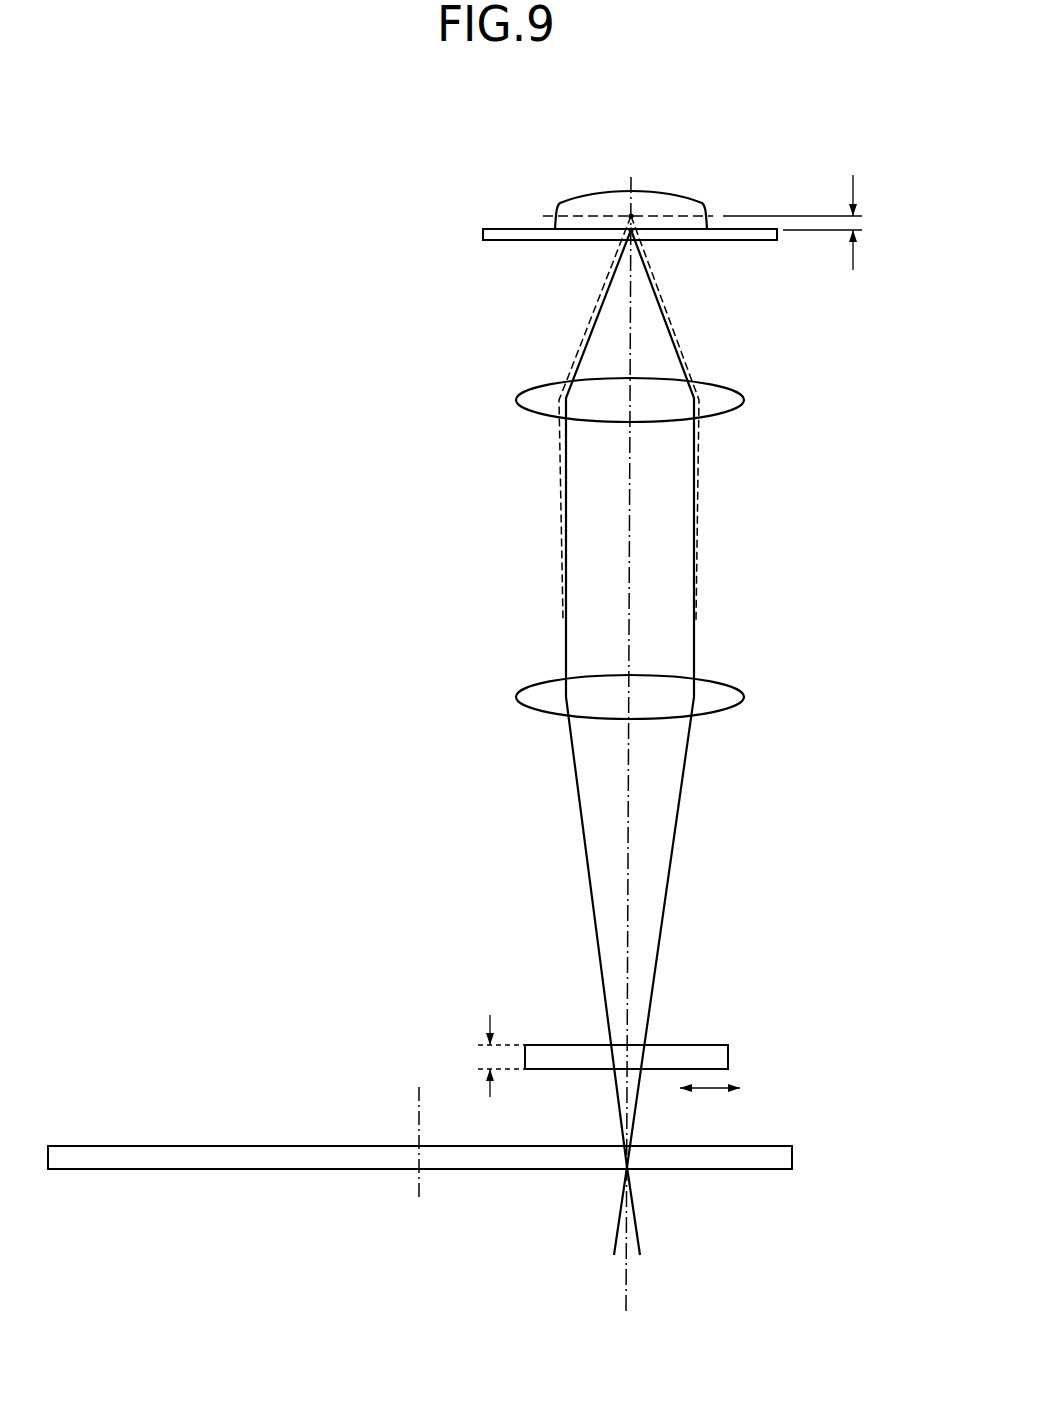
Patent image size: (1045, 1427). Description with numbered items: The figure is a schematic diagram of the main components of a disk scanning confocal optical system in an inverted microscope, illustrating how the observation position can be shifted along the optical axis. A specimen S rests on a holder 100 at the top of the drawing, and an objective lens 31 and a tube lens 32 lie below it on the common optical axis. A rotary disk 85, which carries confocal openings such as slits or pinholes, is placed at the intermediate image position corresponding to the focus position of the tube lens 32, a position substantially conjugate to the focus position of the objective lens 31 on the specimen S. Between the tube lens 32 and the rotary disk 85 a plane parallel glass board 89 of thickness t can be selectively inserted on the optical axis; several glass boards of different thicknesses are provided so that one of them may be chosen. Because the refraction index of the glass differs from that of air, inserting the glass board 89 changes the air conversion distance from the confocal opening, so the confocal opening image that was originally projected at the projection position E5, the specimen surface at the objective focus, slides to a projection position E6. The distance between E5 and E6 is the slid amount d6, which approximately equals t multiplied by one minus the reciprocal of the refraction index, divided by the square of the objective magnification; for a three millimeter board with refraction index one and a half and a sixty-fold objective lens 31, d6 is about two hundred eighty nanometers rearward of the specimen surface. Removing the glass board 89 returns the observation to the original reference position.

The specimen holder plate 100 is at (499, 227).
The specimen S is at (657, 200).
The projection position E6 is at (631, 216).
The projection position E5 is at (635, 232).
The slid amount d6 is at (862, 225).
The objective lens 31 is at (744, 400).
The tube lens 32 is at (744, 697).
The glass board 89 is at (729, 1055).
The thickness t is at (488, 1055).
The rotary disk 85 is at (725, 1174).